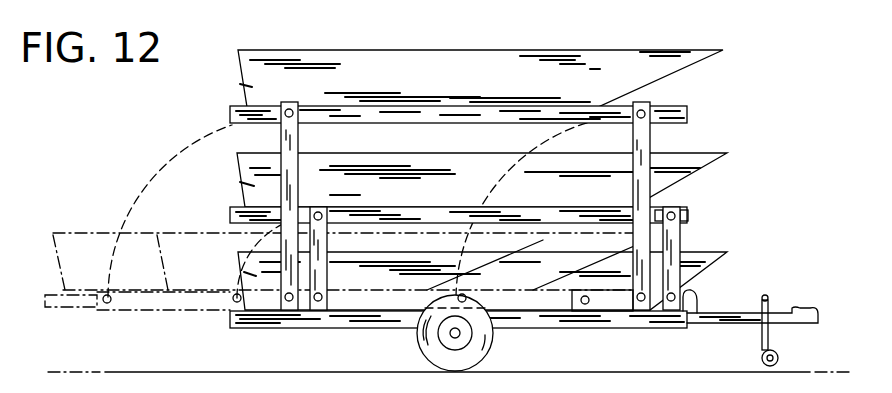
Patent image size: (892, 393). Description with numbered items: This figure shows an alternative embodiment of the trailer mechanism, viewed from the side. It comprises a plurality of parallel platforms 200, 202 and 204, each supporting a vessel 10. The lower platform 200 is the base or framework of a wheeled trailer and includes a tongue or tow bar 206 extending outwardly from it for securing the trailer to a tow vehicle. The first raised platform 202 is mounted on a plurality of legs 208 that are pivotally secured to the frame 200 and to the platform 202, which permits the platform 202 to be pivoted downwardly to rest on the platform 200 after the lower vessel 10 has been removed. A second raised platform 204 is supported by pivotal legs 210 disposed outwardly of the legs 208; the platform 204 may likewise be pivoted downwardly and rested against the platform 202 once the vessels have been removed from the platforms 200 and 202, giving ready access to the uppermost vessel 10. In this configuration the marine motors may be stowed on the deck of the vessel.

The vessel 10 is at (612, 50).
The lower platform 200 is at (578, 330).
The first raised platform 202 is at (690, 215).
The second raised platform 204 is at (678, 108).
The tongue 206 is at (797, 312).
The legs 208 is at (318, 308).
The pivotal legs 210 is at (283, 132).